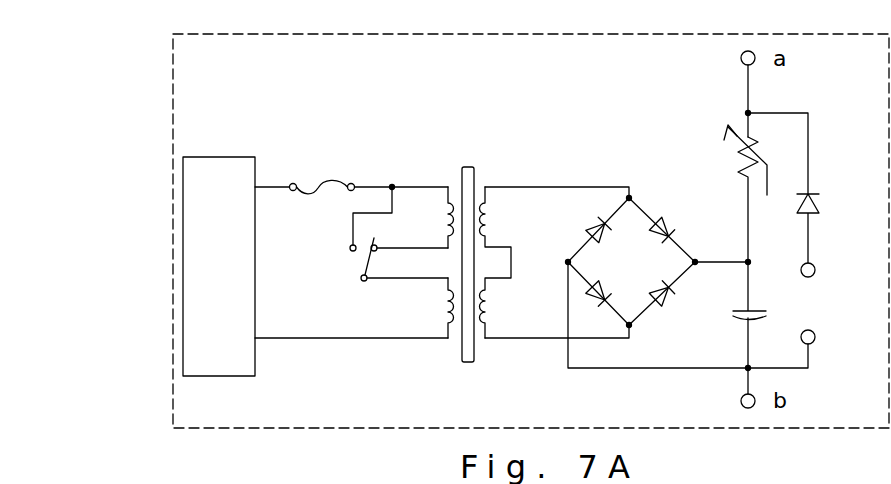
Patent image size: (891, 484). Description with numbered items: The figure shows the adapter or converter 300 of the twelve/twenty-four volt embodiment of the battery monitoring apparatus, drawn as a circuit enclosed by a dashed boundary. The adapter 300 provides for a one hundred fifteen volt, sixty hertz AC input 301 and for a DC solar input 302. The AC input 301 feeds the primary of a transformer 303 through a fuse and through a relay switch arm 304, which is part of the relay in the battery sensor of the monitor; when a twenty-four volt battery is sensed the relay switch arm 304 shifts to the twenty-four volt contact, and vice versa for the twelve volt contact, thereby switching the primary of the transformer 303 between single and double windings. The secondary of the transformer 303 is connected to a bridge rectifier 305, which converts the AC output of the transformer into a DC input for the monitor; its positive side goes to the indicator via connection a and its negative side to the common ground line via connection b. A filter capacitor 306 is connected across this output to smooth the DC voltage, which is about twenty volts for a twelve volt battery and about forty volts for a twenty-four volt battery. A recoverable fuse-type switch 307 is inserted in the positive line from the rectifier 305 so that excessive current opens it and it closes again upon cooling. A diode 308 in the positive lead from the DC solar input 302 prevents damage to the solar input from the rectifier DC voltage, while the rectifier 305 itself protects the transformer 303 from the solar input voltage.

The adapter 300 is at (173, 100).
The AC input 301 is at (218, 376).
The DC solar input 302 is at (810, 316).
The transformer 303 is at (467, 165).
The relay switch arm 304 is at (367, 262).
The bridge rectifier 305 is at (662, 218).
The filter capacitor 306 is at (743, 323).
The recoverable fuse-type switch 307 is at (743, 135).
The diode 308 is at (812, 222).